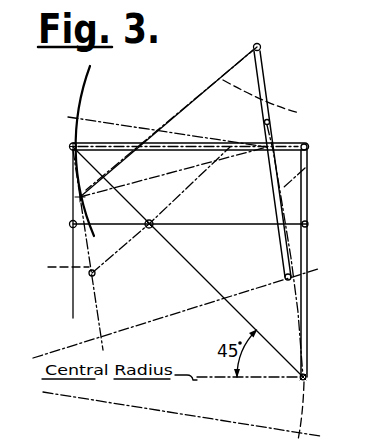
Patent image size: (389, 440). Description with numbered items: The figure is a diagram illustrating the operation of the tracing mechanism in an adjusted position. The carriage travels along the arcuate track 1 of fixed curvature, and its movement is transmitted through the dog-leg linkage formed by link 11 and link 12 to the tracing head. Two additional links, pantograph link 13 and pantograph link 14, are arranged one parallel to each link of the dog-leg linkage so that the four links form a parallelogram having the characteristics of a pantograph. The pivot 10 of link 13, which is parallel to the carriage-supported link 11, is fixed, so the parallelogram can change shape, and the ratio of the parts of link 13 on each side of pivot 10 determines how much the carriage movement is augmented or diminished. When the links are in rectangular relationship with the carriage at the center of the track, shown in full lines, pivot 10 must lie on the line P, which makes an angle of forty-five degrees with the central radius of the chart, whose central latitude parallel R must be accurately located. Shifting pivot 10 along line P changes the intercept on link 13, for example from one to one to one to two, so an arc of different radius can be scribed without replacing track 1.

The track 1 is at (81, 89).
The pivot point 10 is at (150, 229).
The link of dog-leg linkage 11 is at (287, 144).
The link of dog-leg linkage 12 is at (308, 162).
The pantograph link 13 is at (188, 222).
The pantograph link 14 is at (72, 253).
The line P is at (182, 283).
The central latitude parallel R is at (308, 393).